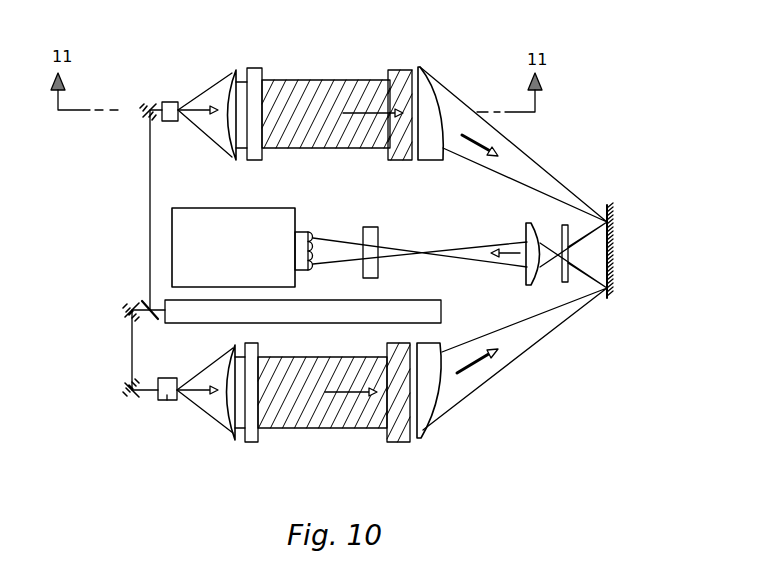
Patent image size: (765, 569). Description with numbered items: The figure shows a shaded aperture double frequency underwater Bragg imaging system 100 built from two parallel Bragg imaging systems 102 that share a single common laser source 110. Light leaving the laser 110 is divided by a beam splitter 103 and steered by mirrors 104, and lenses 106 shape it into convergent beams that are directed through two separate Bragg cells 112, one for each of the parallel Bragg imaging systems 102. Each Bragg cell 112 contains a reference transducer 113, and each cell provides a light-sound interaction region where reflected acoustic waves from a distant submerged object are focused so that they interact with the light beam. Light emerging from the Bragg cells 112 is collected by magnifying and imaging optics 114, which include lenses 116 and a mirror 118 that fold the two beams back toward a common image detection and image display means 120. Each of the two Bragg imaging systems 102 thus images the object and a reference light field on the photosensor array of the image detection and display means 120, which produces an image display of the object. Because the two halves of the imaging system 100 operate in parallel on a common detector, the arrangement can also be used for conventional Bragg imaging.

The shaded aperture double frequency underwater Bragg imaging system 100 is at (562, 110).
The Bragg imaging system 102 is at (291, 51).
The beam splitter 103 is at (140, 302).
The mirror 104 is at (146, 100).
The lens 106 is at (250, 444).
The common laser source 110 is at (441, 313).
The Bragg cell 112 is at (381, 89).
The reference transducer 113 is at (401, 72).
The magnifying and imaging optics 114 is at (539, 367).
The lens 116 is at (527, 224).
The mirror 118 is at (612, 262).
The image detection and image display means 120 is at (255, 260).